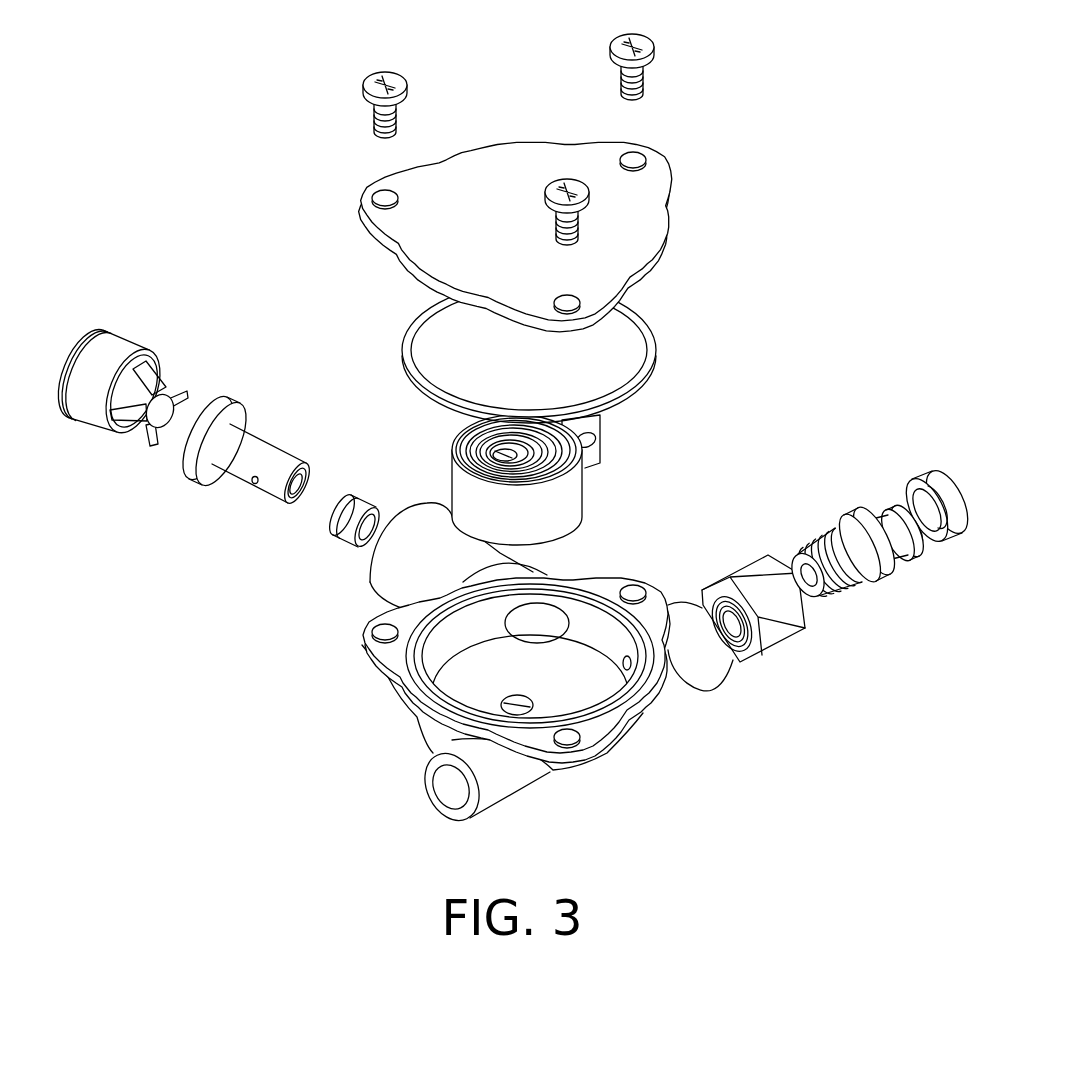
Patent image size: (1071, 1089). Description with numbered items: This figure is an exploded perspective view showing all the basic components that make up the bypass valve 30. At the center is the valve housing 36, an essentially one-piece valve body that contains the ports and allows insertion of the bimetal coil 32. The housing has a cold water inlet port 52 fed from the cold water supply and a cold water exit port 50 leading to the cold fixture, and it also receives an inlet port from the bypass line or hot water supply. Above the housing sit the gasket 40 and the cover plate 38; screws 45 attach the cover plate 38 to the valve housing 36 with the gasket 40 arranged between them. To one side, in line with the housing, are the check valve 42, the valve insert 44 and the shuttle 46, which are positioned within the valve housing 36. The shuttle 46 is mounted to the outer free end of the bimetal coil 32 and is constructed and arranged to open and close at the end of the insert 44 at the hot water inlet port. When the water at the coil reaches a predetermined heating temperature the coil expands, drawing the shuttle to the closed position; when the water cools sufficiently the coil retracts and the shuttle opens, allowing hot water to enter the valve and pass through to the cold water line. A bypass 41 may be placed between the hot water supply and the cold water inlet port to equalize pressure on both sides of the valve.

The valve 30 is at (511, 427).
The bimetal coil 32 is at (582, 490).
The valve housing 36 is at (583, 678).
The cover plate 38 is at (645, 231).
The gasket 40 is at (651, 334).
The bypass 41 is at (240, 495).
The check valve 42 is at (150, 340).
The valve insert 44 is at (248, 455).
The screws 45 is at (371, 76).
The shuttle 46 is at (325, 548).
The cold water exit port 50 is at (775, 543).
The cold water inlet port 52 is at (440, 787).